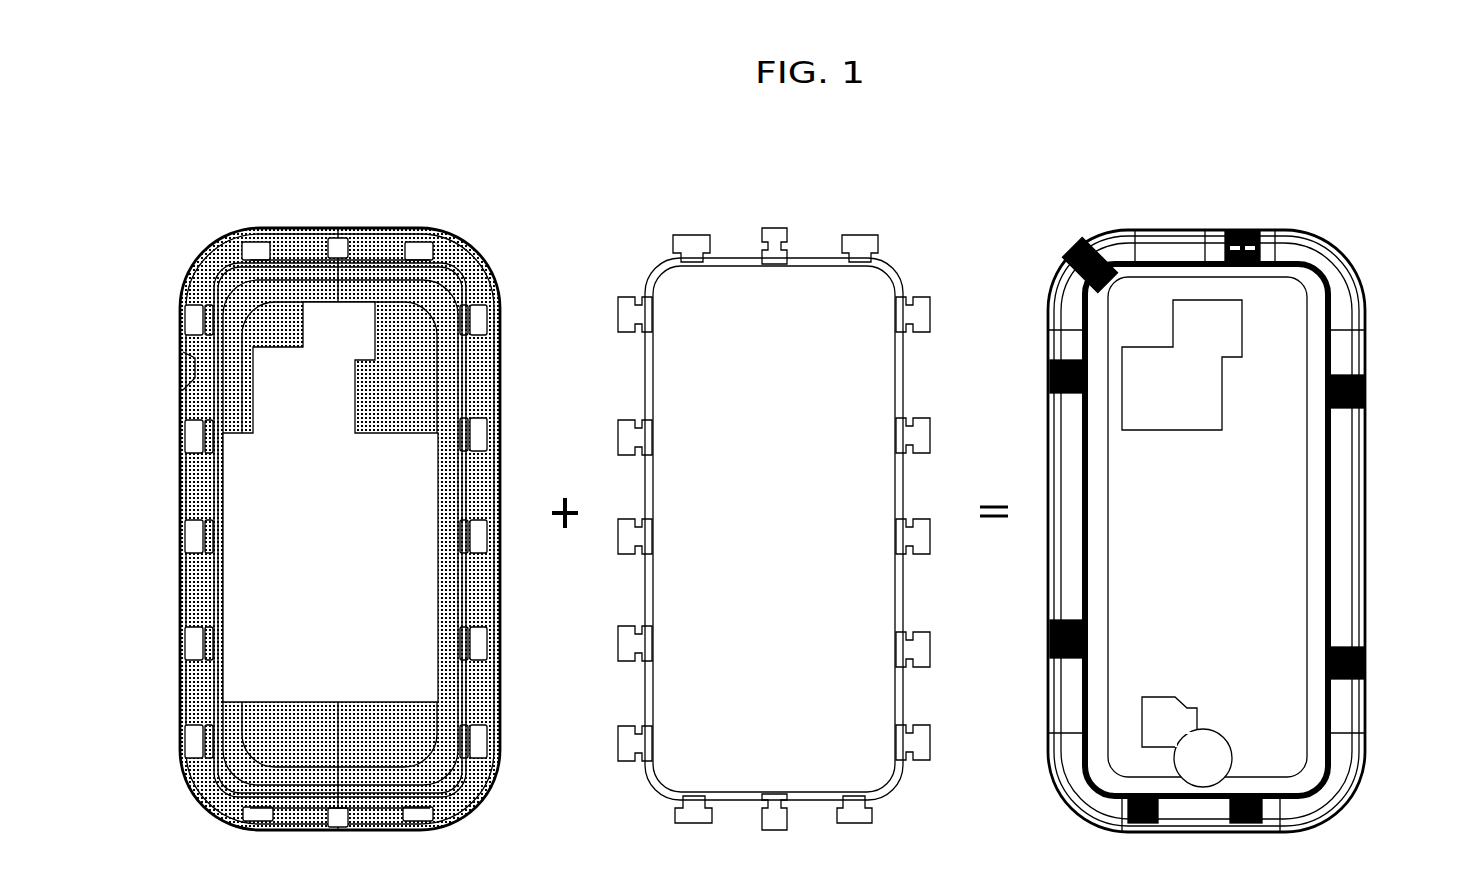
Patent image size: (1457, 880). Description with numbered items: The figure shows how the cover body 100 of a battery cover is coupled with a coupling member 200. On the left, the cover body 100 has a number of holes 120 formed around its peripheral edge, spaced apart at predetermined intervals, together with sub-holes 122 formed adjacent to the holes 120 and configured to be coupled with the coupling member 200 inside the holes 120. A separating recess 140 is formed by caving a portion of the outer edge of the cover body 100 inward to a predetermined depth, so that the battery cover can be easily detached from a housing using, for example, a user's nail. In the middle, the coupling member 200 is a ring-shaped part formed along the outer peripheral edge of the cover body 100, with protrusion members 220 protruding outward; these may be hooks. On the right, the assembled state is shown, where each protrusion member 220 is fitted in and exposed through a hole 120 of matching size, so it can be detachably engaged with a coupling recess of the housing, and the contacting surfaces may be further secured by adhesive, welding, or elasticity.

The cover body 100 is at (483, 255).
The hole 120 is at (482, 322).
The sub-hole 122 is at (473, 430).
The separating recess 140 is at (182, 368).
The coupling member 200 is at (1005, 493).
The protrusion member 220 is at (933, 312).